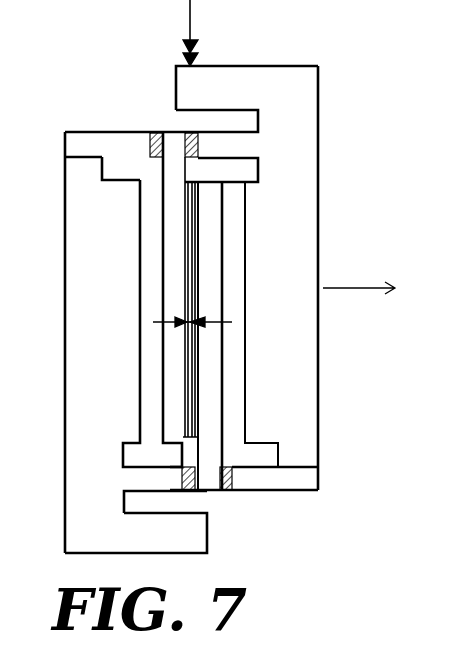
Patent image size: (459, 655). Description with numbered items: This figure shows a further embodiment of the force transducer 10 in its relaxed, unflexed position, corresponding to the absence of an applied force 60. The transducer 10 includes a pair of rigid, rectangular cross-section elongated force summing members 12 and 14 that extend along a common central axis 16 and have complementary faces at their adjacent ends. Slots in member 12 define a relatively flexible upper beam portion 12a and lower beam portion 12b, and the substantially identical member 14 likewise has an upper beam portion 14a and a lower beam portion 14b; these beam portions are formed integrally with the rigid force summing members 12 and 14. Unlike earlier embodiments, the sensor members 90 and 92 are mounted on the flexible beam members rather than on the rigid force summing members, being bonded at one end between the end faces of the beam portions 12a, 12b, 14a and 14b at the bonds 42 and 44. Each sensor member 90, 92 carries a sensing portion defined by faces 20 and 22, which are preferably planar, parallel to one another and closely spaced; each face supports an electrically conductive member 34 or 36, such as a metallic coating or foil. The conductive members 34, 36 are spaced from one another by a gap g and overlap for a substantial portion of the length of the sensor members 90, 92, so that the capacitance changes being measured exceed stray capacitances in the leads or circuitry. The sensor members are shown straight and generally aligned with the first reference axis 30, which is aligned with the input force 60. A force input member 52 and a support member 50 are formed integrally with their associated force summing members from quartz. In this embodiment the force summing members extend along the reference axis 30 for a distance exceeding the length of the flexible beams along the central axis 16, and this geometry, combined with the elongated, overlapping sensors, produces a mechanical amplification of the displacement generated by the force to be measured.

The transducer 10 is at (360, 90).
The elongated member 12 is at (97, 322).
The upper beam portion 12a is at (110, 140).
The lower beam portion 12b is at (160, 480).
The elongated member 14 is at (312, 233).
The upper beam portion 14a is at (258, 483).
The lower beam portion 14b is at (230, 137).
The common central axis 16 is at (347, 288).
The face 20 is at (187, 170).
The face 22 is at (178, 182).
The reference axis 30 is at (192, 10).
The electrically conductive member 34 is at (191, 350).
The electrically conductive member 36 is at (189, 388).
The bond 42 is at (186, 132).
The bond 44 is at (227, 492).
The support member 50 is at (142, 542).
The force input member 52 is at (229, 72).
The applied force 60 is at (183, 47).
The sensor member 90 is at (170, 256).
The sensor member 92 is at (215, 256).
The gap g is at (192, 318).